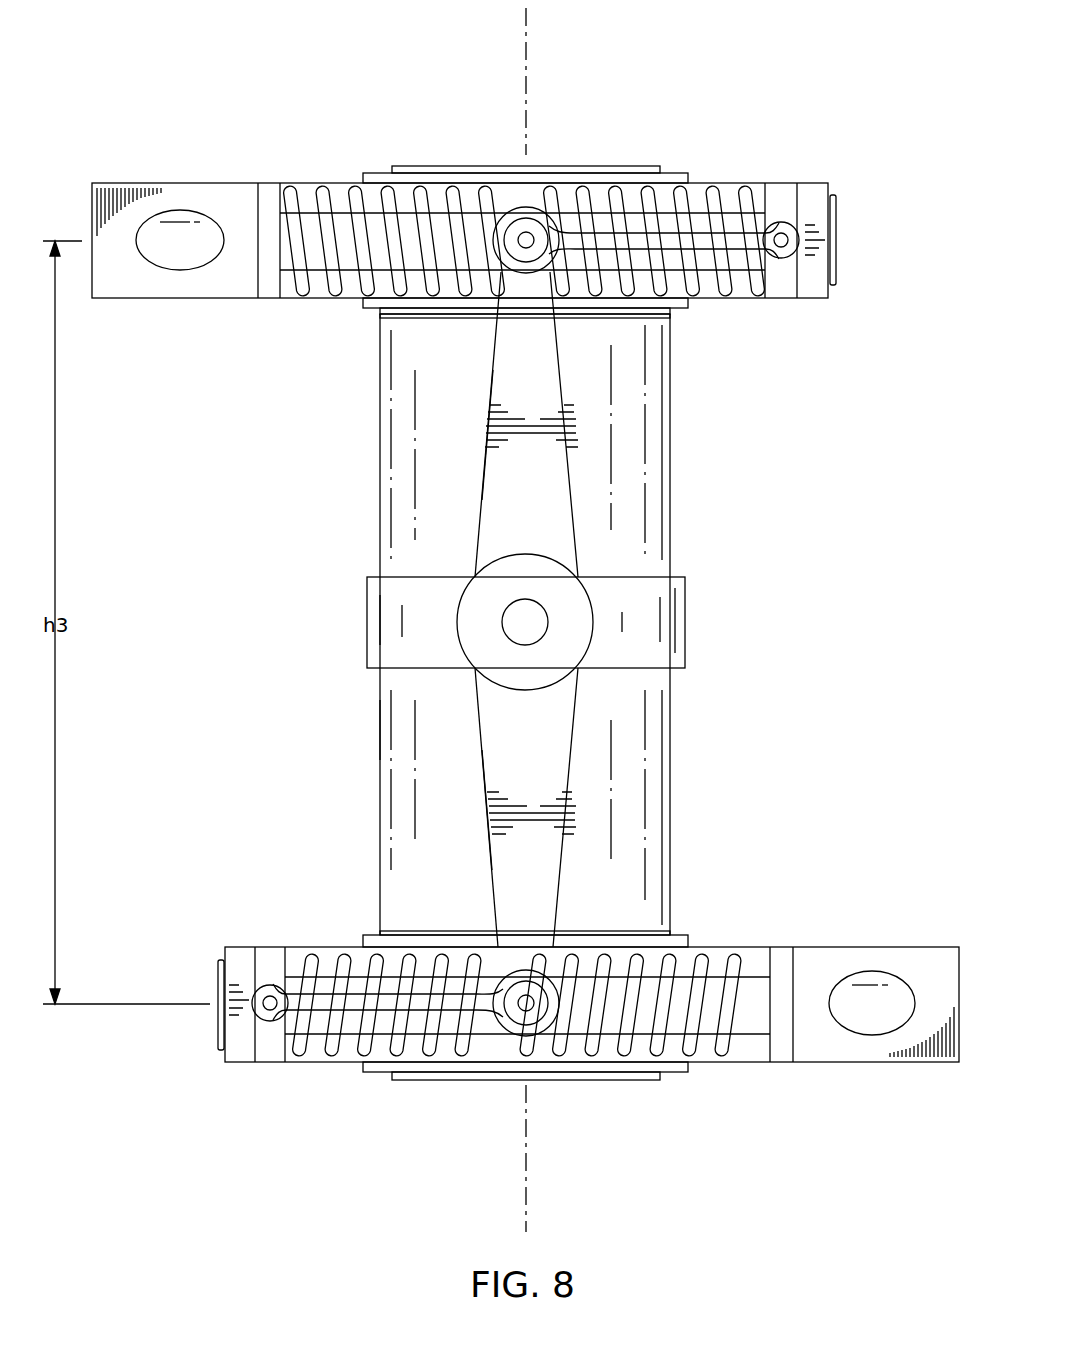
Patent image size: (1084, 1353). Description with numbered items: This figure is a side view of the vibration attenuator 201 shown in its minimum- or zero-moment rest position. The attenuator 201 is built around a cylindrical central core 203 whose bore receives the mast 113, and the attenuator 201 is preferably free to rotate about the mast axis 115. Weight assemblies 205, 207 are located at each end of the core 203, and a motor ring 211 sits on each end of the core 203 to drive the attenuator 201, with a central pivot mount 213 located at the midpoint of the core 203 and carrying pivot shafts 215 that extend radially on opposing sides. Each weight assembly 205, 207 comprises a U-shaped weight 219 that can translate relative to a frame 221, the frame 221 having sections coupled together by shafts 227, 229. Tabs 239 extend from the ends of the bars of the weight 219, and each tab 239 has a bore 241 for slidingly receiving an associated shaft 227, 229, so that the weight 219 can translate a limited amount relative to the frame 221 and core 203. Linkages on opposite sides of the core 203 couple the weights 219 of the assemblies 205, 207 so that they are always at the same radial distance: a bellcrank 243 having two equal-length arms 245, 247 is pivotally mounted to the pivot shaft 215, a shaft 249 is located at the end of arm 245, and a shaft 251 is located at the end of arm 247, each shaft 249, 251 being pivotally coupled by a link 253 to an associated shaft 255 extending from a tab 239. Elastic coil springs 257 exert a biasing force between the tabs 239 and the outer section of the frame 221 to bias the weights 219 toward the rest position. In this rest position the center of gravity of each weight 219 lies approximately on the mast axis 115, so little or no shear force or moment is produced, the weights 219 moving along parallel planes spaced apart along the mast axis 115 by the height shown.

The mast axis 115 is at (528, 80).
The weight assembly 205 is at (460, 240).
The weight assembly 207 is at (828, 936).
The elastic coil spring 257 is at (322, 196).
The shaft 249 is at (527, 235).
The shaft 251 is at (525, 1008).
The mast 113 is at (630, 166).
The link 253 is at (698, 245).
The shaft 255 is at (783, 225).
The shaft 229 is at (840, 246).
The shaft 227 is at (215, 1026).
The frame 221 is at (154, 308).
The U-shaped weight 219 is at (765, 310).
The tab 239 is at (790, 300).
The motor ring 211 is at (450, 310).
The bellcrank 243 is at (524, 424).
The bore 241 is at (523, 807).
The arm 245 is at (490, 525).
The arm 247 is at (488, 720).
The attenuator 201 is at (683, 402).
The central pivot mount 213 is at (565, 651).
The pivot shaft 215 is at (526, 634).
The central core 203 is at (367, 753).